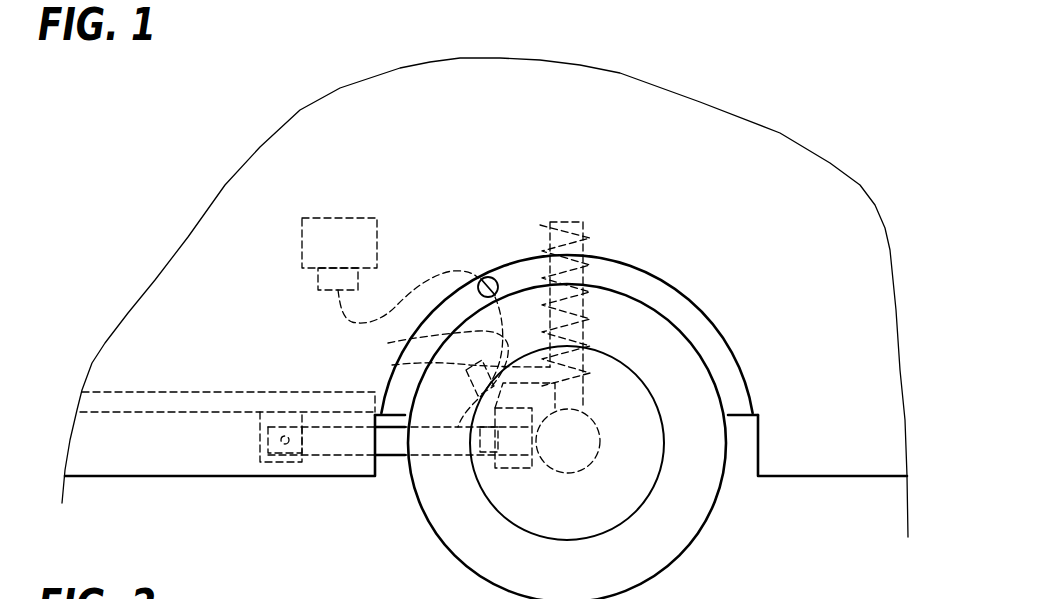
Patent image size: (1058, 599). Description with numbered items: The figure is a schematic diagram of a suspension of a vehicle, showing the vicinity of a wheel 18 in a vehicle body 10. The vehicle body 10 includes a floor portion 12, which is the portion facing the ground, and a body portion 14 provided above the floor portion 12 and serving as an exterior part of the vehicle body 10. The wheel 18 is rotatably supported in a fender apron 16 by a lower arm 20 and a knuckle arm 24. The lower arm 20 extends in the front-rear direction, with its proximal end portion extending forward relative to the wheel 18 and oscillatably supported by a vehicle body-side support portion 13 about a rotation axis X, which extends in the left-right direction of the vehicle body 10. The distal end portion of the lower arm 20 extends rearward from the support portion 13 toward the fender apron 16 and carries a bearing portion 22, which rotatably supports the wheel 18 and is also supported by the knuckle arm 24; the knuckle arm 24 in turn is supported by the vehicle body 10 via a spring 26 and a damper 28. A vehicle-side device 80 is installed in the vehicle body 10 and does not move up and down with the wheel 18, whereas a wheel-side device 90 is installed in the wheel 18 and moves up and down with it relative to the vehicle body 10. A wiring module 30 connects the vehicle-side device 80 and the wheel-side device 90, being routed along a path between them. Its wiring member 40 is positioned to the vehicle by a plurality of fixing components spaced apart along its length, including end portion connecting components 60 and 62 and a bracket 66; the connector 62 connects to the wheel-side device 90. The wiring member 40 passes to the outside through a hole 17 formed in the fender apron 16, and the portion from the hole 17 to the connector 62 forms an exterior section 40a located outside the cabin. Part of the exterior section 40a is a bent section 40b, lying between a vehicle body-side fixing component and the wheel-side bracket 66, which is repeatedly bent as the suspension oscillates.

The vehicle body 10 is at (833, 480).
The floor portion 12 is at (183, 388).
The vehicle body-side support portion 13 is at (257, 458).
The rotation axis X is at (283, 450).
The body portion 14 is at (815, 172).
The fender apron 16 is at (693, 320).
The hole 17 is at (488, 277).
The wheel 18 is at (663, 572).
The lower arm 20 is at (382, 460).
The bearing portion 22 is at (605, 437).
The knuckle arm 24 is at (583, 372).
The spring 26 is at (590, 240).
The damper 28 is at (566, 218).
The wiring module 30 is at (404, 304).
The wiring member 40 is at (338, 310).
The exterior section 40a is at (457, 437).
The bent section 40b is at (390, 343).
The end portion connecting component 60 is at (318, 280).
The end portion connecting component 62 is at (487, 460).
The bracket 66 is at (392, 365).
The vehicle-side device 80 is at (335, 218).
The wheel-side device 90 is at (513, 468).